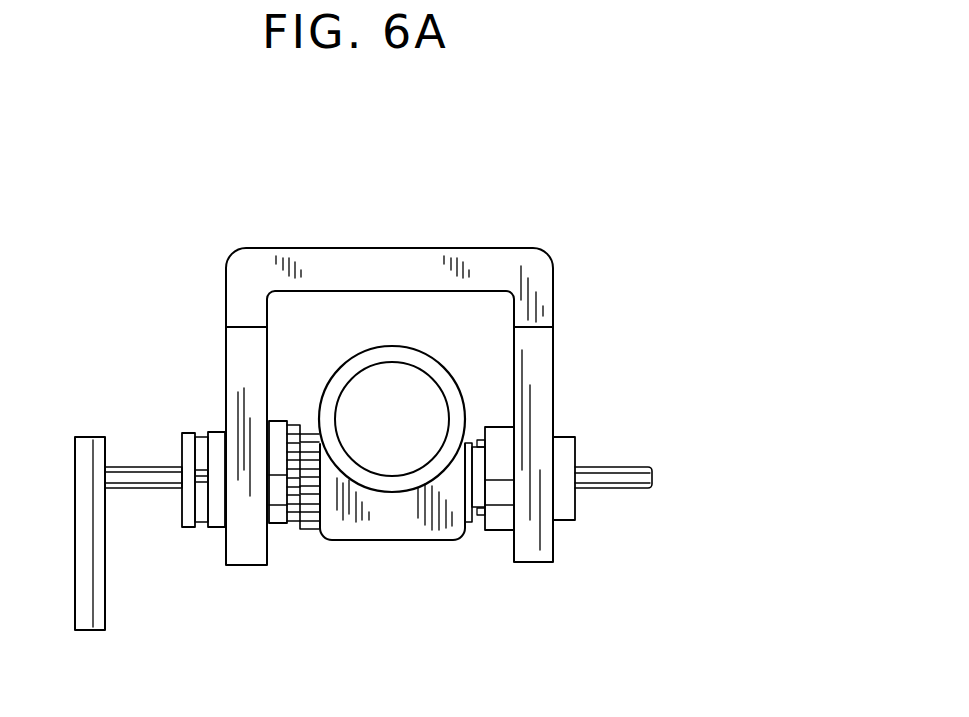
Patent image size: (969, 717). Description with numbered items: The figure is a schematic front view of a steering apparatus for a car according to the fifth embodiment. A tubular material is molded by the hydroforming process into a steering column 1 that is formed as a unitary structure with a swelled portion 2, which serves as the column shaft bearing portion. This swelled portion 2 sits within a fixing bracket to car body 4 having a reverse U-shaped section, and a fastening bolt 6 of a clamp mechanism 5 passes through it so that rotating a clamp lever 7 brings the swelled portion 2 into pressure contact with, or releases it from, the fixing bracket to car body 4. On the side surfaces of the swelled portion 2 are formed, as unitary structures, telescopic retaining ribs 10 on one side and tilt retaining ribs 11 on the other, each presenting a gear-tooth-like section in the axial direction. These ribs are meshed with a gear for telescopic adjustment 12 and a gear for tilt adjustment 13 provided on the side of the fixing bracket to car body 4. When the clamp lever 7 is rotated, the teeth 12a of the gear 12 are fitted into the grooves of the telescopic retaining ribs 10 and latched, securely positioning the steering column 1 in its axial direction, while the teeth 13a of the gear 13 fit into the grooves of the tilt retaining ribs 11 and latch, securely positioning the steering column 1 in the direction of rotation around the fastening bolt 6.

The steering column 1 is at (393, 340).
The swelled portion 2 is at (397, 527).
The fixing bracket to car body 4 is at (428, 247).
The clamp mechanism 5 is at (185, 529).
The fastening bolt 6 is at (612, 490).
The clamp lever 7 is at (88, 632).
The telescopic retaining ribs 10 is at (466, 438).
The tilt retaining ribs 11 is at (312, 530).
The gear for telescopic adjustment 12 is at (502, 532).
The teeth of gear for telescopic adjustment 12a is at (478, 530).
The gear for tilt adjustment 13 is at (294, 480).
The teeth of gear for tilt adjustment 13a is at (298, 424).